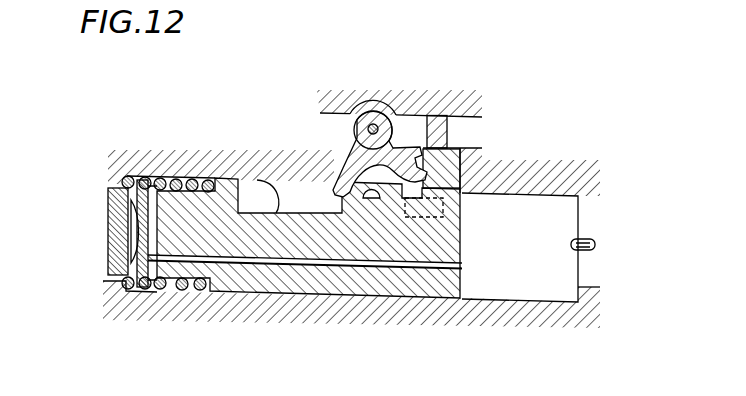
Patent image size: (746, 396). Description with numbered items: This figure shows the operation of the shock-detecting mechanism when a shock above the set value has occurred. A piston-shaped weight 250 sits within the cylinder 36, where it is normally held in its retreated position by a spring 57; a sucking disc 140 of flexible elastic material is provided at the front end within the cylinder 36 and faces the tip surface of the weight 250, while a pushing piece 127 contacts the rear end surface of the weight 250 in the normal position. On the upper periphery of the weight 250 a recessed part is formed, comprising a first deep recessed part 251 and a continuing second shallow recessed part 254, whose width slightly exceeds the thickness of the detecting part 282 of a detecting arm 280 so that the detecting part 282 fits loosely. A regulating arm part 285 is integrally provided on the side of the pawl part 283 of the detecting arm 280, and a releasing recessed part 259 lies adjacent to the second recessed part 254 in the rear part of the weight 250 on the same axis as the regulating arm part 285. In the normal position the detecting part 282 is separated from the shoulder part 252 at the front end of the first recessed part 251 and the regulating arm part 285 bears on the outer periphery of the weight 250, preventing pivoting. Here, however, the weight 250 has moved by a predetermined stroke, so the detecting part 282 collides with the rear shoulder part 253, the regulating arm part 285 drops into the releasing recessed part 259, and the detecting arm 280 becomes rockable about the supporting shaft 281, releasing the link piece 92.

The cylinder 36 is at (500, 302).
The spring 57 is at (168, 290).
The link piece 92 is at (447, 115).
The pushing piece 127 is at (582, 251).
The sucking disc 140 is at (113, 232).
The weight 250 is at (285, 268).
The first deep recessed part 251 is at (257, 180).
The shoulder part 252 is at (238, 177).
The rear shoulder part 253 is at (352, 145).
The second shallow recessed part 254 is at (381, 200).
The releasing recessed part 259 is at (463, 193).
The detecting arm 280 is at (431, 136).
The supporting shaft 281 is at (371, 124).
The detecting part 282 is at (338, 177).
The pawl part 283 is at (447, 149).
The regulating arm part 285 is at (427, 183).